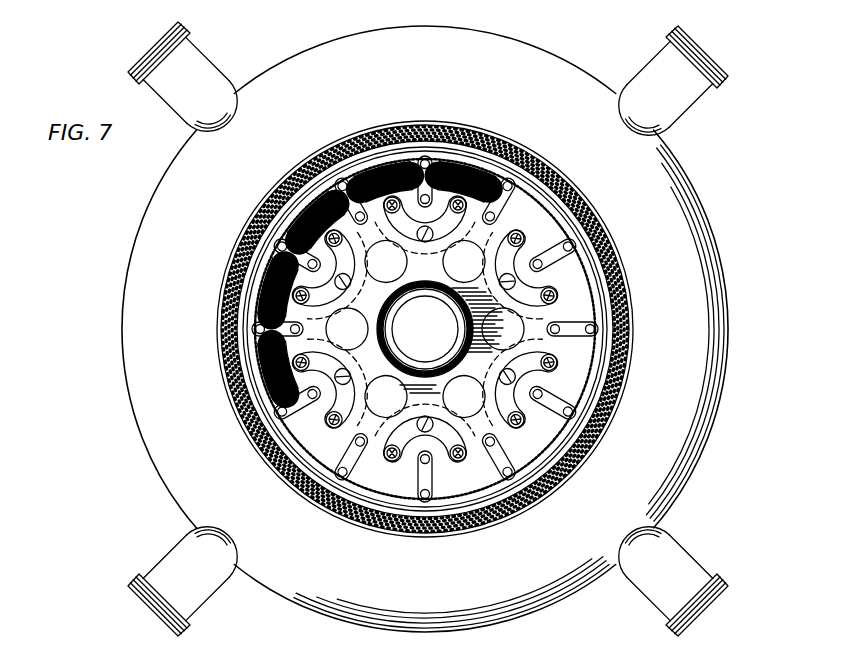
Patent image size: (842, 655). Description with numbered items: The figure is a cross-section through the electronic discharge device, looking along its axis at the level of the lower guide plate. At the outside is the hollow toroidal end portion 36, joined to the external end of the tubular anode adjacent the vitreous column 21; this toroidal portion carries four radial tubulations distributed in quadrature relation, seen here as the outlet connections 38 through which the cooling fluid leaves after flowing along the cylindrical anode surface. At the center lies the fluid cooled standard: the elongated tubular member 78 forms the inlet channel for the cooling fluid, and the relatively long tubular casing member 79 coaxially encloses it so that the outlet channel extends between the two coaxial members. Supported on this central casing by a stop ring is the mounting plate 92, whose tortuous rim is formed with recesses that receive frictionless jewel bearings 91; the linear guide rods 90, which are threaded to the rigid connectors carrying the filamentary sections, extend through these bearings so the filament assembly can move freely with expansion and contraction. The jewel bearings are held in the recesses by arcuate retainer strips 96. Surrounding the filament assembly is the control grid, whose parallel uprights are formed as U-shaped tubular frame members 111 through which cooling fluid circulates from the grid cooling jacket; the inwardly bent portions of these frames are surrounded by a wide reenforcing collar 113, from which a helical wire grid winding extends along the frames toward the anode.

The vitreous column 21 is at (610, 253).
The hollow toroidal end portion 36 is at (698, 280).
The outlet connection 38 is at (146, 57).
The elongated tubular member 78 is at (438, 283).
The tubular casing member 79 is at (463, 300).
The linear guide rod 90 is at (493, 262).
The jewel bearing 91 is at (558, 228).
The mounting plate 92 is at (545, 312).
The arcuate retainer strip 96 is at (405, 200).
The U-shaped tubular frame member 111 is at (272, 392).
The reenforcing collar 113 is at (458, 160).